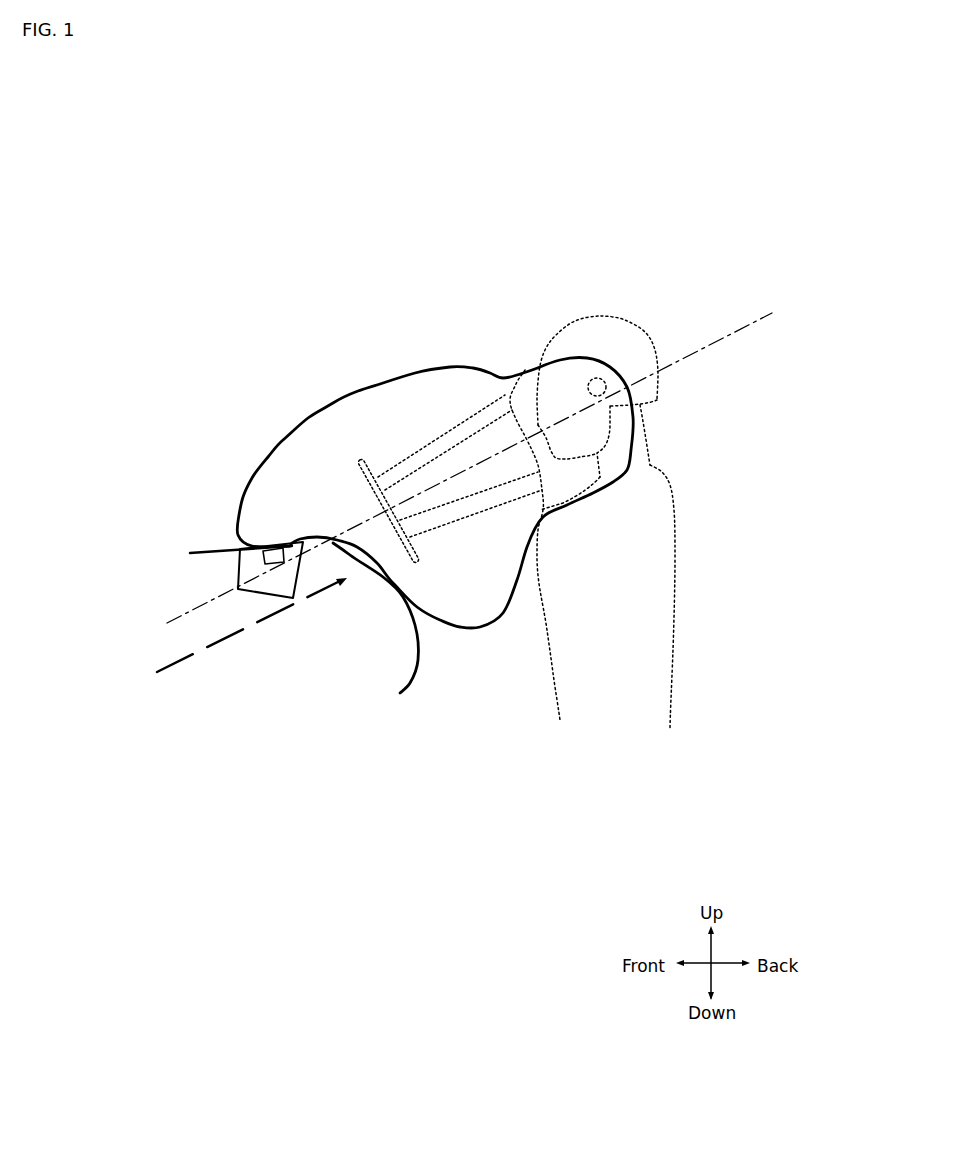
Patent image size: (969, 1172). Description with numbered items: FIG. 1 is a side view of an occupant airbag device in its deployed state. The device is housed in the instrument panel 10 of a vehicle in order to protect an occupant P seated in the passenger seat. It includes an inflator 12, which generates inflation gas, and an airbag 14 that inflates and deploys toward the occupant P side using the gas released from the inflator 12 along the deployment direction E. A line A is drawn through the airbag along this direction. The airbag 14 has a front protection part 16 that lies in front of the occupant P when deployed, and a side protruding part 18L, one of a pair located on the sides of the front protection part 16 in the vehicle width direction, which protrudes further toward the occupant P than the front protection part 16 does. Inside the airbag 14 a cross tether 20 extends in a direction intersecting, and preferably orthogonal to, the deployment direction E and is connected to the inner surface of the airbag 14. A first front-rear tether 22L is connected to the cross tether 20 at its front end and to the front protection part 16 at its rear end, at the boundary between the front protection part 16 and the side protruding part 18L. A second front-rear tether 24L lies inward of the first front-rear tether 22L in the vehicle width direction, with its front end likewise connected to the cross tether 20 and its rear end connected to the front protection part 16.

The instrument panel 10 is at (215, 547).
The inflator 12 is at (268, 562).
The airbag 14 is at (333, 403).
The front protection part 16 is at (525, 370).
The side protruding part 18L is at (632, 448).
The cross tether 20 is at (384, 577).
The first front-rear tether 22L is at (433, 447).
The second front-rear tether 24L is at (493, 415).
The axis line A is at (170, 590).
The deployment direction E is at (712, 343).
The occupant P is at (673, 547).